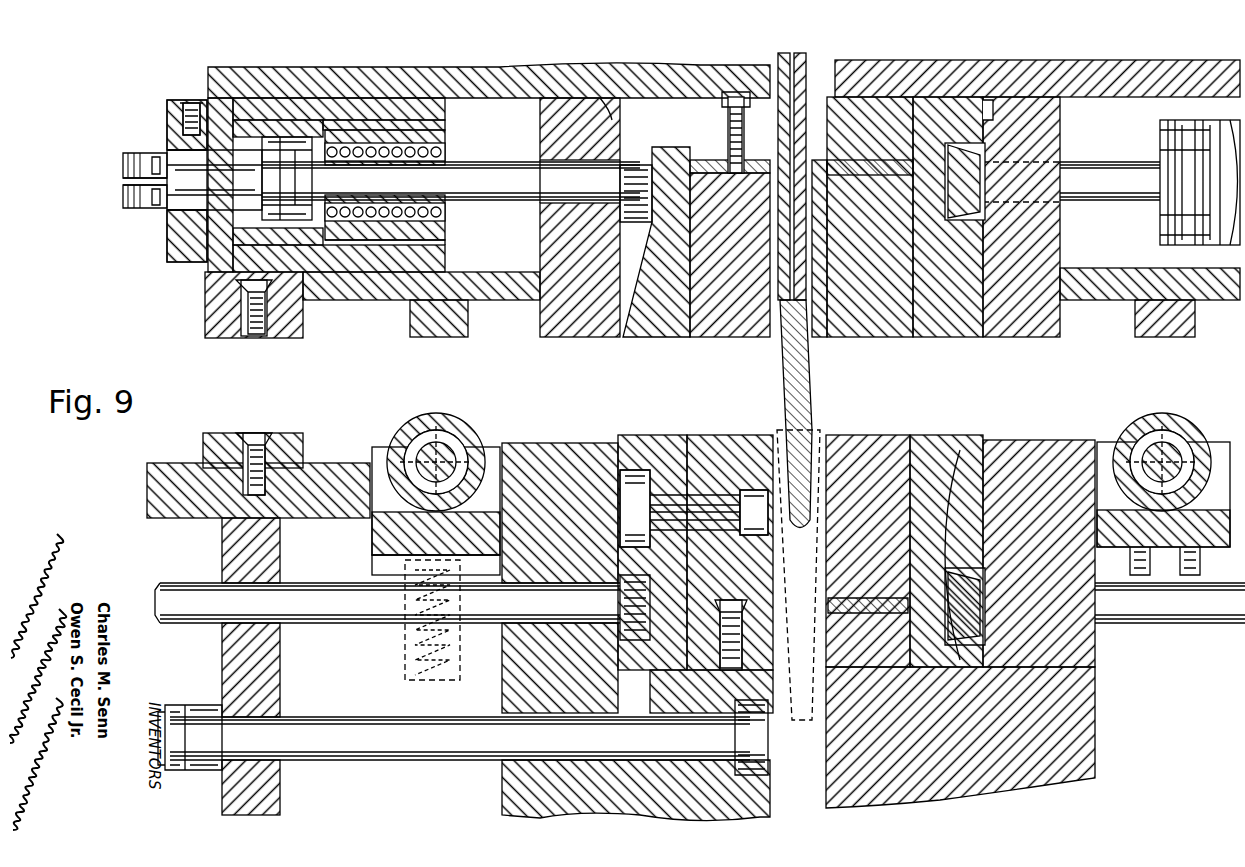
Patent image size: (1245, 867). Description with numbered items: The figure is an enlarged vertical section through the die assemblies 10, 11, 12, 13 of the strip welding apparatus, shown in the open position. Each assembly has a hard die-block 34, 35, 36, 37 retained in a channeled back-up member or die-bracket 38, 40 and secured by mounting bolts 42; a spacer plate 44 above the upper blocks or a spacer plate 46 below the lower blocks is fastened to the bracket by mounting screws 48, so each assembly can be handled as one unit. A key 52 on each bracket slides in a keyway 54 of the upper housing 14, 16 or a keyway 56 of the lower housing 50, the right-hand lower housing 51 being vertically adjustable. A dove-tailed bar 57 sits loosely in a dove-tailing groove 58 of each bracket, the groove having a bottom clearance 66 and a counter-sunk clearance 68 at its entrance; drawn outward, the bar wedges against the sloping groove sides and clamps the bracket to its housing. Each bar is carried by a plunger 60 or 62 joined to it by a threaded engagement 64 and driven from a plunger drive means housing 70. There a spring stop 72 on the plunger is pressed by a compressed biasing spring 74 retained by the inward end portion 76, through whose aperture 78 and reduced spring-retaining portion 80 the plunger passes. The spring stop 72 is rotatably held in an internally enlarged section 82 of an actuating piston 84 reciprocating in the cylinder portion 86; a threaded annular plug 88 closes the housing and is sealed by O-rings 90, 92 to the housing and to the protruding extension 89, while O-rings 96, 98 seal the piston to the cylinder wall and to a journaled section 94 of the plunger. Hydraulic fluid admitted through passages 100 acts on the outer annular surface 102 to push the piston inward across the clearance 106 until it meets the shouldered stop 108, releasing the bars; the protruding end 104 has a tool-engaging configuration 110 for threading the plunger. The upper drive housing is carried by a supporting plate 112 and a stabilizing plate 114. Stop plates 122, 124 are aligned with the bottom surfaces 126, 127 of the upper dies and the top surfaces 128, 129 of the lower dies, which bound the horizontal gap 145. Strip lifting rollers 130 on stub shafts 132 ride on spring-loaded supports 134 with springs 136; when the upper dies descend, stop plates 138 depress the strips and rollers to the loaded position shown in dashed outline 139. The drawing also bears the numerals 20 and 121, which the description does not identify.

The upper die assembly 10 is at (698, 338).
The upper die assembly 11 is at (915, 335).
The lower die assembly 12 is at (672, 420).
The lower die assembly 13 is at (915, 440).
The upper housing member 14 is at (555, 140).
The upper housing section 16 is at (560, 80).
The knife blade 20 is at (790, 380).
The die-block 34 is at (770, 338).
The die-block 35 is at (835, 335).
The die-block 36 is at (690, 440).
The die-block 37 is at (870, 450).
The channel member 38 is at (735, 97).
The channel member 40 is at (715, 680).
The mounting bolt 42 is at (800, 545).
The spacer plate 44 is at (800, 110).
The spacer plate 46 is at (745, 605).
The mounting screw 48 is at (772, 100).
The lower die housing 50 is at (520, 722).
The lower right hand die assembly housing 51 is at (940, 740).
The key 52 is at (625, 110).
The keyway 54 is at (608, 100).
The keyway 56 is at (600, 650).
The dove-tailed bar 57 is at (690, 250).
The dove-tailing groove 58 is at (985, 110).
The plunger 60 is at (508, 200).
The plunger 62 is at (488, 625).
The threaded engagement 64 is at (652, 165).
The bottom clearance 66 is at (690, 170).
The counter-sunk clearance 68 is at (985, 165).
The plunger drive means housing 70 is at (345, 113).
The spring stop 72 is at (175, 205).
The biasing spring 74 is at (410, 240).
The inward end portion 76 is at (445, 150).
The aperture 78 is at (455, 200).
The reduced spring-retaining portion 80 is at (395, 198).
The internally enlarged section 82 is at (315, 183).
The actuating piston 84 is at (210, 245).
The cylinder portion 86 is at (335, 250).
The annular plug member 88 is at (168, 118).
The outwardly protruding extension 89 is at (178, 160).
The O-ring 90 is at (192, 102).
The O-ring 92 is at (130, 160).
The journaled section 94 is at (135, 196).
The O-ring 96 is at (312, 250).
The O-ring 98 is at (235, 300).
The passages 100 is at (185, 103).
The outer annular surface 102 is at (215, 110).
The protruding outer end 104 is at (120, 162).
The clearance 106 is at (345, 115).
The inwardly shouldered portion 108 is at (400, 120).
The tool-engaging configuration 110 is at (128, 192).
The supporting plate 112 is at (310, 298).
The lateral stabilizing plate 114 is at (380, 285).
The rod 121 is at (460, 752).
The stop plate 122 is at (285, 332).
The stop plate 124 is at (207, 448).
The bottom surface 126 is at (722, 338).
The bottom surface 127 is at (875, 335).
The upper surface 128 is at (740, 436).
The top surface 129 is at (838, 440).
The strip lifting roller 130 is at (478, 445).
The stub shaft 132 is at (450, 452).
The spring-loaded support 134 is at (372, 565).
The spring 136 is at (405, 652).
The stop plate 138 is at (440, 337).
The dashed outline 139 is at (375, 450).
The horizontal gap 145 is at (720, 402).